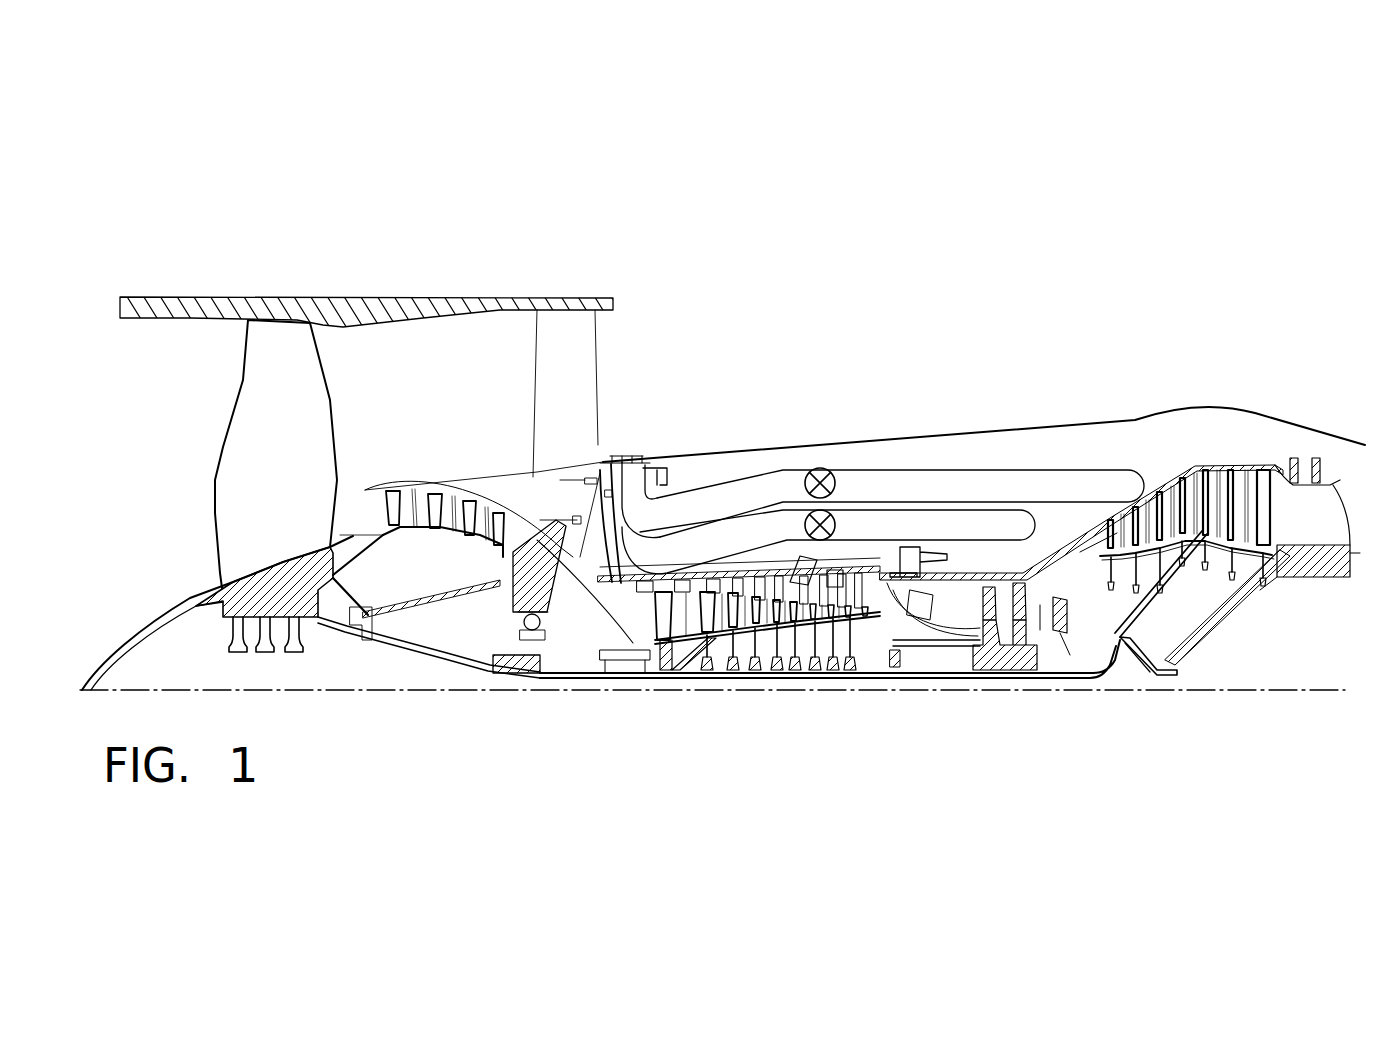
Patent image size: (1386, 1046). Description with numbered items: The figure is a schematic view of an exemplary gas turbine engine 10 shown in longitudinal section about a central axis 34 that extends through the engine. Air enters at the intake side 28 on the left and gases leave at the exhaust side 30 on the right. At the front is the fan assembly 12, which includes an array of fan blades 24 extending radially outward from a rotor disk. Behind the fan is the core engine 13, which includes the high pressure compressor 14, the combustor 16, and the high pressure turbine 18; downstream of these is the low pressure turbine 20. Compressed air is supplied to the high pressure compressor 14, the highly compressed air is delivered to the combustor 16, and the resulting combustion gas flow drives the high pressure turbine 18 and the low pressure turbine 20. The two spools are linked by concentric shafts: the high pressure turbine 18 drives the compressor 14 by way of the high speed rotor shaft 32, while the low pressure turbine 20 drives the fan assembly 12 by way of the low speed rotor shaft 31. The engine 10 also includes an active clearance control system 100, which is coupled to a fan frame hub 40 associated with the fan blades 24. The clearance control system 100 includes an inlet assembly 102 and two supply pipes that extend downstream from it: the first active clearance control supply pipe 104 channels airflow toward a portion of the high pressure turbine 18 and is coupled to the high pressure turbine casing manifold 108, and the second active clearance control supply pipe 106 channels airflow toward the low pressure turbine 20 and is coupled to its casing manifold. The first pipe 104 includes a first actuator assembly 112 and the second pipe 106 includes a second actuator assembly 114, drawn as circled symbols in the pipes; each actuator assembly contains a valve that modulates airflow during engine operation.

The gas turbine engine 10 is at (1010, 165).
The fan assembly 12 is at (323, 290).
The core engine 13 is at (738, 697).
The high pressure compressor 14 is at (736, 579).
The combustor 16 is at (902, 675).
The high pressure turbine 18 is at (1031, 562).
The low pressure turbine 20 is at (1232, 458).
The fan blades 24 is at (302, 389).
The intake side 28 is at (311, 505).
The exhaust side 30 is at (1343, 460).
The low speed rotor shaft 31 is at (1117, 672).
The high speed rotor shaft 32 is at (933, 650).
The central axis 34 is at (1163, 693).
The fan frame hub 40 is at (608, 460).
The active clearance control system 100 is at (812, 438).
The inlet assembly 102 is at (650, 456).
The first active clearance control supply pipe 104 is at (1000, 536).
The second active clearance control supply pipe 106 is at (1044, 499).
The high pressure turbine casing manifold 108 is at (1011, 558).
The first actuator assembly 112 is at (836, 525).
The second actuator assembly 114 is at (836, 483).